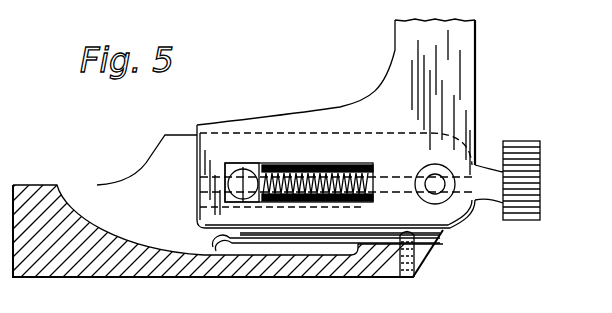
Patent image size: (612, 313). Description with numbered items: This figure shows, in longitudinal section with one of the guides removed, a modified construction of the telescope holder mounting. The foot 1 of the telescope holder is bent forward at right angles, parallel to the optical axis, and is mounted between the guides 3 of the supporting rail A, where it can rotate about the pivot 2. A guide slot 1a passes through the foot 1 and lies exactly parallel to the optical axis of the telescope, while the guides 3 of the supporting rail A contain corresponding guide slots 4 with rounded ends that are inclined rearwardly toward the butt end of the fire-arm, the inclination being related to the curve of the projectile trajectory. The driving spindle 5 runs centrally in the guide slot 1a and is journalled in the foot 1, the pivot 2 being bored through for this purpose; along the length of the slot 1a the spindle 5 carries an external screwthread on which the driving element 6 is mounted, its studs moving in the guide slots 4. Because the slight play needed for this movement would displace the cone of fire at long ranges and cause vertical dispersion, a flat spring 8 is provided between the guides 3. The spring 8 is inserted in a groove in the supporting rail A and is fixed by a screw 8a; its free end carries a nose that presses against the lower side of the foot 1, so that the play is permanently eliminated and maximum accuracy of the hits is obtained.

The foot 1 is at (318, 116).
The guide slot 1a is at (362, 166).
The pivot 2 is at (432, 176).
The guide 3 is at (150, 157).
The guide slot 4 is at (345, 216).
The driving spindle 5 is at (523, 142).
The driving element 6 is at (237, 178).
The flat spring 8 is at (270, 244).
The screw 8a is at (433, 268).
The supporting rail A is at (51, 268).